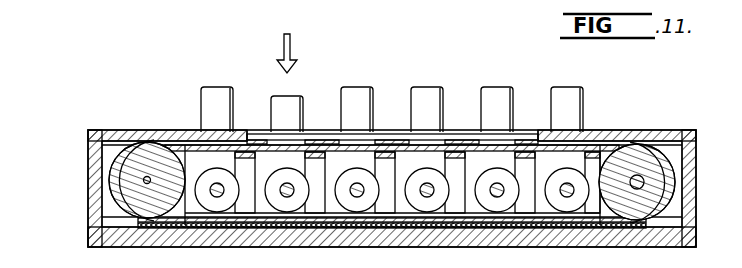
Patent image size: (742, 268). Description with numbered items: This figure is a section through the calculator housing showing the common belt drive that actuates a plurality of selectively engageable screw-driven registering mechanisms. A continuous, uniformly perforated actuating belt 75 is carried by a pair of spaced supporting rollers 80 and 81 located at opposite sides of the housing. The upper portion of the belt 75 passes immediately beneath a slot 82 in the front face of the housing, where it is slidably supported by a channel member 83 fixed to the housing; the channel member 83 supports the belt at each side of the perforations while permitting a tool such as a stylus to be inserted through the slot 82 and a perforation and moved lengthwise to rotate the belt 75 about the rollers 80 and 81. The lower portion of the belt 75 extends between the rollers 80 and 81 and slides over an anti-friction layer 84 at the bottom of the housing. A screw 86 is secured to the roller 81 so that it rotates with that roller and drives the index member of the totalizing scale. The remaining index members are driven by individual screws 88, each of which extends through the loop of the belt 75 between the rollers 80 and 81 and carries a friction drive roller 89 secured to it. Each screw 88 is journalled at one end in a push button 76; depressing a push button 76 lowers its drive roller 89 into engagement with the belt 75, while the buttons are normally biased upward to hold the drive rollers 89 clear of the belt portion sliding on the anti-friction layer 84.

The actuating belt 75 is at (142, 218).
The push button 76 is at (270, 99).
The supporting roller 80 is at (638, 150).
The supporting roller 81 is at (134, 150).
The slot 82 is at (388, 138).
The channel member 83 is at (586, 156).
The anti-friction layer 84 is at (397, 220).
The screw 86 is at (146, 181).
The screw 88 is at (214, 198).
The friction drive roller 89 is at (347, 205).